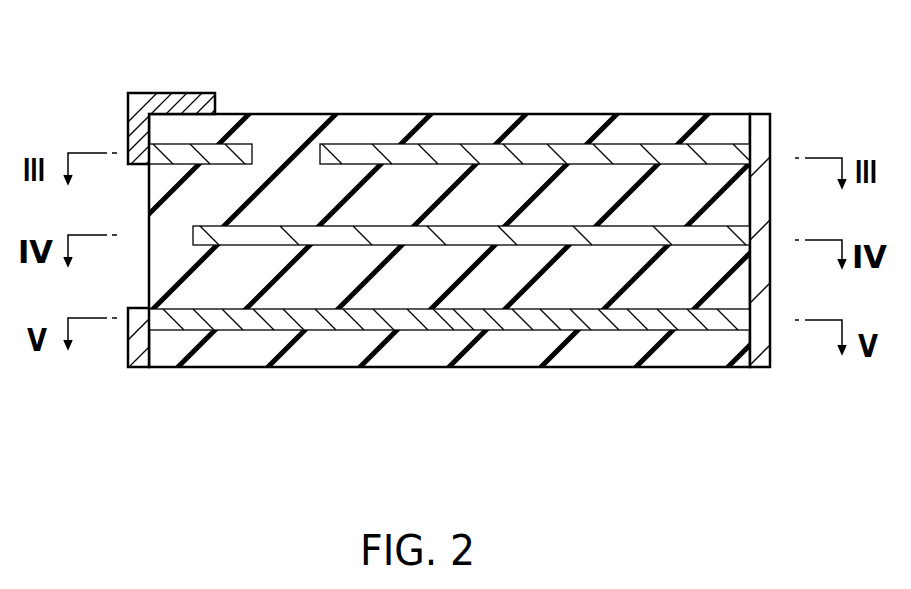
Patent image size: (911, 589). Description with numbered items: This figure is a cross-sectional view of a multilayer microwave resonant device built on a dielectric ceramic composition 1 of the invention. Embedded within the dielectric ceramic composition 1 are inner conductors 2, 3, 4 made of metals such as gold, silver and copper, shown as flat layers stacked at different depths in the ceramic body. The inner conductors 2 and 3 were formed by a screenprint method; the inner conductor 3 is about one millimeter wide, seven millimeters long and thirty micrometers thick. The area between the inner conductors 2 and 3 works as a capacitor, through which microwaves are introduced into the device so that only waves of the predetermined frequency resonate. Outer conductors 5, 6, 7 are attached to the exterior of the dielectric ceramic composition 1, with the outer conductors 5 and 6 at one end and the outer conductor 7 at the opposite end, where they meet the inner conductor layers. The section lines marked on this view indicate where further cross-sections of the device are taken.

The dielectric ceramic composition 1 is at (723, 300).
The inner conductor 2 is at (383, 322).
The inner conductor 3 is at (560, 234).
The inner conductor 4 is at (235, 152).
The outer conductor 5 is at (181, 97).
The outer conductor 6 is at (137, 350).
The outer conductor 7 is at (758, 133).